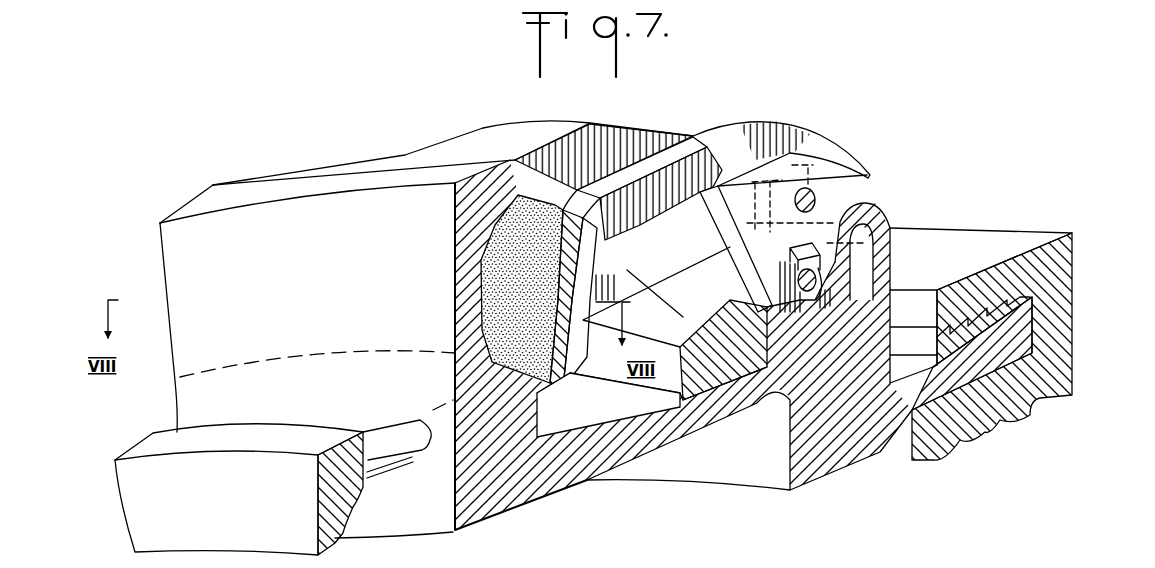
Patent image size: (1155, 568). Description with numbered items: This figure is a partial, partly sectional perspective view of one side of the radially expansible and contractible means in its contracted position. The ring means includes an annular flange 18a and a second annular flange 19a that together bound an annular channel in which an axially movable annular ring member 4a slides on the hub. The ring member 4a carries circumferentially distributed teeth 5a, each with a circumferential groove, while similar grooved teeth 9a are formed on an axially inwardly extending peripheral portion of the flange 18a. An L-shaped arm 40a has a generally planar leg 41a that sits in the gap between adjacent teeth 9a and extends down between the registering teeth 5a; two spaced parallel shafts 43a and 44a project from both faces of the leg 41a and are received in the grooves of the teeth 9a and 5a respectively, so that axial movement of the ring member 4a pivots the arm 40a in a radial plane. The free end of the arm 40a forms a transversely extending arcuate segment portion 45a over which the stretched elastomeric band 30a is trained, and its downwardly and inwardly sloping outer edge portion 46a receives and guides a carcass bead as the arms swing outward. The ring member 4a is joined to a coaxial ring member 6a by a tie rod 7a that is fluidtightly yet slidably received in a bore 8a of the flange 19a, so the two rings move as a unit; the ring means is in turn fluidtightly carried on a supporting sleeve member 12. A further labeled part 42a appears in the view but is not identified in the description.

The annular ring member 4a is at (735, 385).
The teeth 5a is at (887, 218).
The coaxial ring member 6a is at (247, 511).
The tie rod 7a is at (395, 430).
The bore 8a is at (412, 458).
The teeth 9a is at (770, 163).
The supporting sleeve member 12 is at (1075, 262).
The annular flange 18a is at (890, 265).
The annular flange 19a is at (505, 165).
The annular elastomeric band 30a is at (590, 247).
The L-shaped arm 40a is at (476, 122).
The leg 41a is at (867, 208).
The recess 42a is at (690, 203).
The shaft 43a is at (810, 297).
The shaft 44a is at (808, 196).
The arcuate segment portion 45a is at (577, 295).
The sloping outer edge portion 46a is at (688, 143).